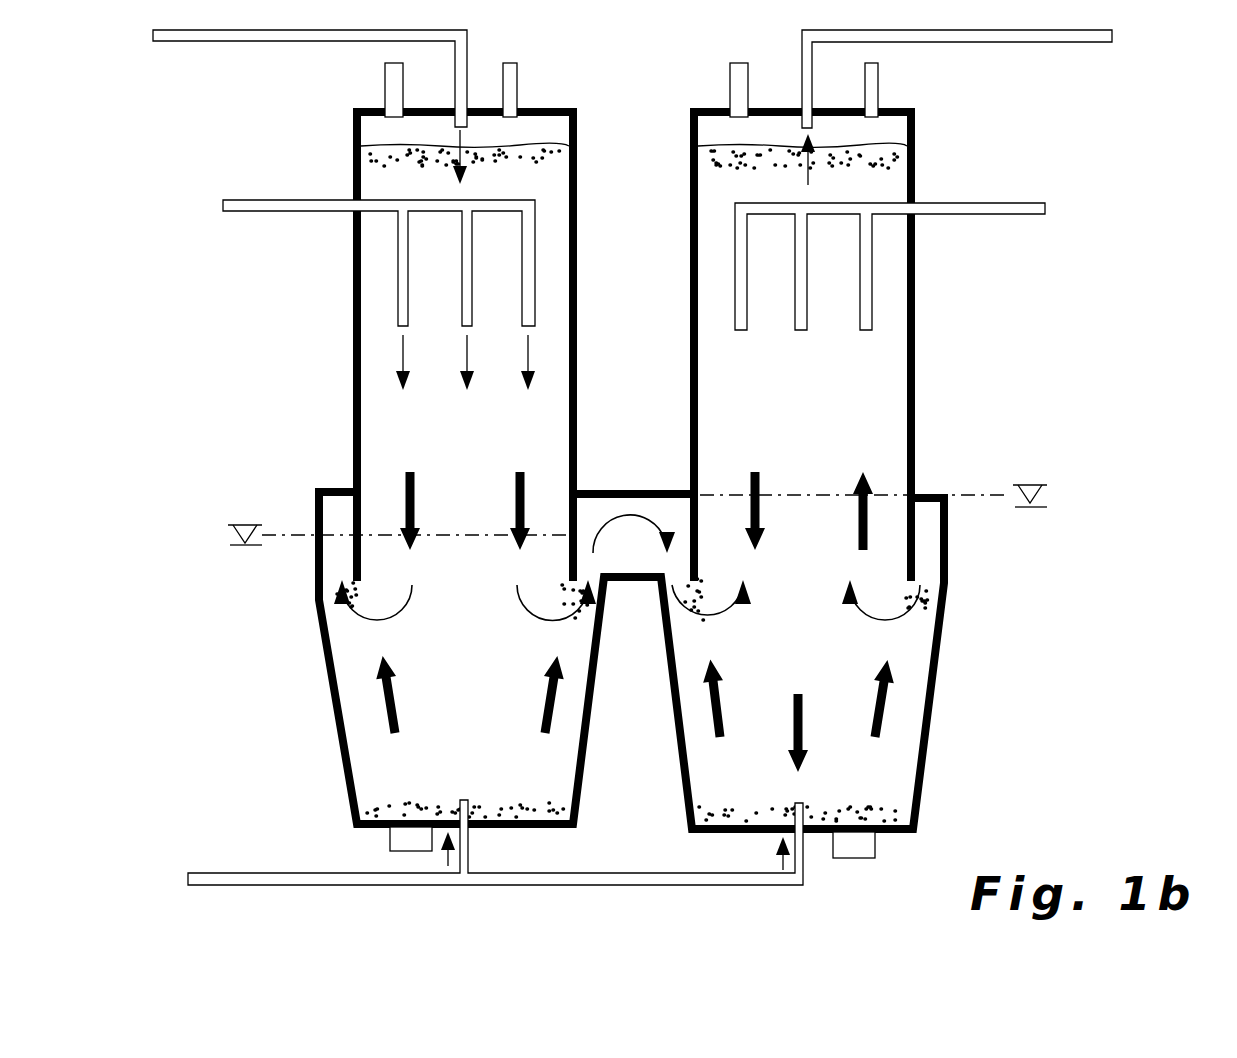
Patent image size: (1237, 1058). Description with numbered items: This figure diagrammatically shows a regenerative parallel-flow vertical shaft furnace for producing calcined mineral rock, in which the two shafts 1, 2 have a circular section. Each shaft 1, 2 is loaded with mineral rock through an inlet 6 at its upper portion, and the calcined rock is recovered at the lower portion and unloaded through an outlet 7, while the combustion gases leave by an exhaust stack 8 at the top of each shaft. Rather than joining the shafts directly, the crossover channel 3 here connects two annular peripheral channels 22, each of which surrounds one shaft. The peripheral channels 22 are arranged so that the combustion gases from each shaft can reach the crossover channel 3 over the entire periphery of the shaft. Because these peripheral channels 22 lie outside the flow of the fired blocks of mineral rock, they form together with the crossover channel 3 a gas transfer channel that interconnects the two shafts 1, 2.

The shaft 1 is at (314, 120).
The shaft 2 is at (950, 125).
The crossover channel 3 is at (657, 488).
The inlet 6 is at (519, 90).
The outlet 7 is at (390, 838).
The exhaust stack 8 is at (405, 88).
The annular peripheral channel 22 is at (313, 553).